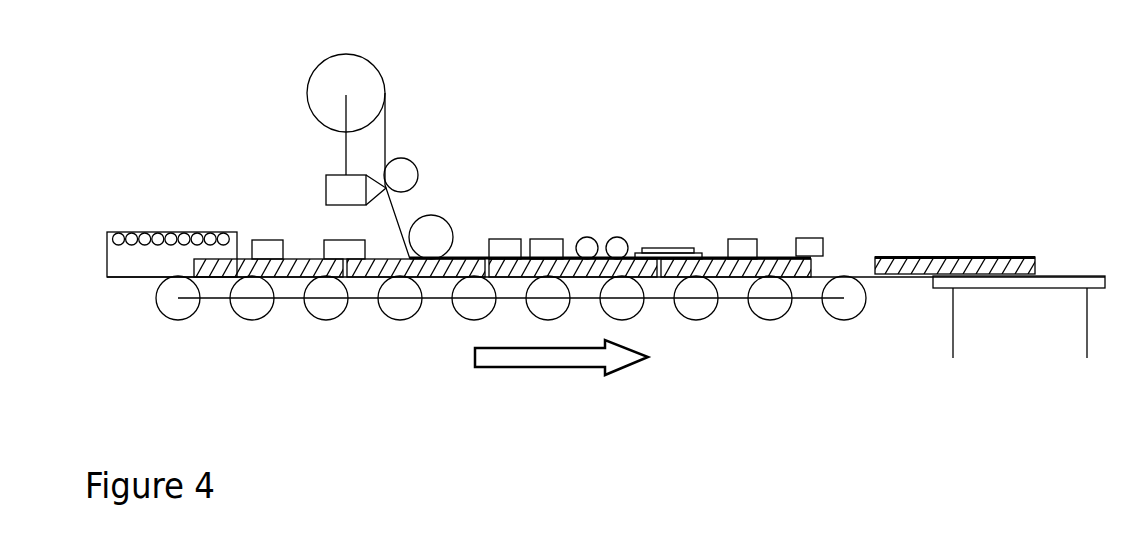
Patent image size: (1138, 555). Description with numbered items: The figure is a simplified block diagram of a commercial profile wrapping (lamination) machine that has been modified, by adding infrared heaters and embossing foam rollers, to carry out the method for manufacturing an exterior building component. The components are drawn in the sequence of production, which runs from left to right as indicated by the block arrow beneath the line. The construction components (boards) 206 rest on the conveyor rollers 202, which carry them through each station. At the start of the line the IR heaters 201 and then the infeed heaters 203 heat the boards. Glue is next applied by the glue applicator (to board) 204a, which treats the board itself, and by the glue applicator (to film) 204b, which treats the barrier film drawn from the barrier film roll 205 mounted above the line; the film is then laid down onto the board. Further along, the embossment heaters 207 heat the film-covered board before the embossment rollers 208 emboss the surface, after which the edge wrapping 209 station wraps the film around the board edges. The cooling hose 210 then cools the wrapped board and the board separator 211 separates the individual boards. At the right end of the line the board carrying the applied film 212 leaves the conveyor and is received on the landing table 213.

The IR heaters 201 is at (145, 233).
The conveyor rollers 202 is at (260, 317).
The infeed heaters 203 is at (267, 240).
The glue applicator (to board) 204a is at (333, 240).
The glue applicator (to film) 204b is at (326, 180).
The barrier film roll 205 is at (366, 60).
The construction components (boards) 206 is at (467, 258).
The embossment heaters 207 is at (523, 239).
The embossment rollers 208 is at (613, 237).
The edge wrapping 209 is at (667, 248).
The cooling hose 210 is at (747, 237).
The board separator 211 is at (812, 238).
The applied film 212 is at (908, 257).
The landing table 213 is at (1048, 274).